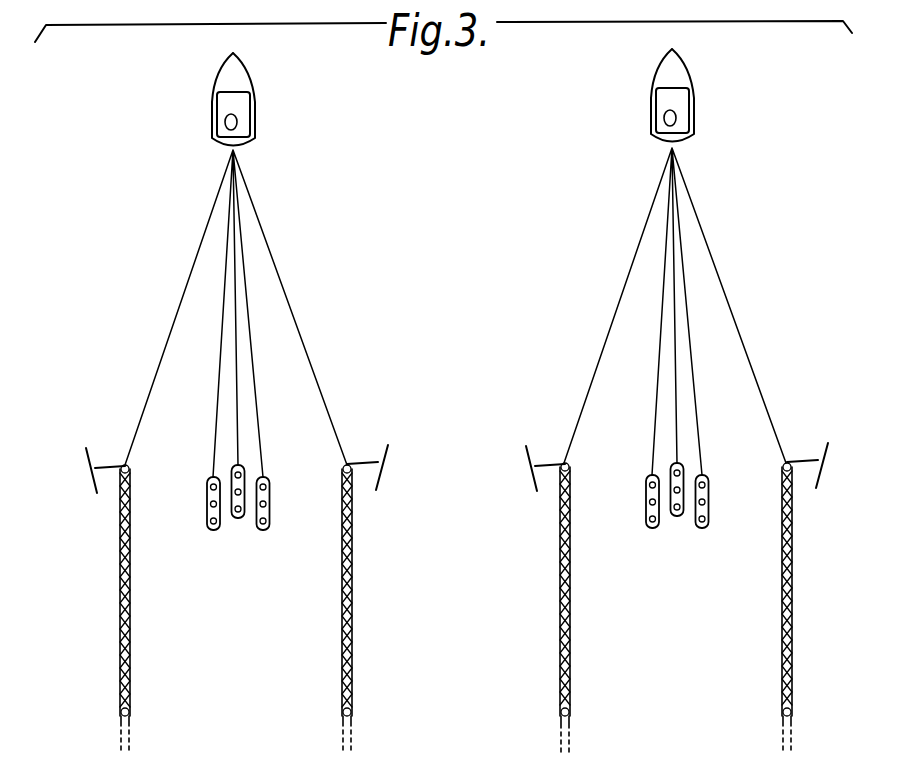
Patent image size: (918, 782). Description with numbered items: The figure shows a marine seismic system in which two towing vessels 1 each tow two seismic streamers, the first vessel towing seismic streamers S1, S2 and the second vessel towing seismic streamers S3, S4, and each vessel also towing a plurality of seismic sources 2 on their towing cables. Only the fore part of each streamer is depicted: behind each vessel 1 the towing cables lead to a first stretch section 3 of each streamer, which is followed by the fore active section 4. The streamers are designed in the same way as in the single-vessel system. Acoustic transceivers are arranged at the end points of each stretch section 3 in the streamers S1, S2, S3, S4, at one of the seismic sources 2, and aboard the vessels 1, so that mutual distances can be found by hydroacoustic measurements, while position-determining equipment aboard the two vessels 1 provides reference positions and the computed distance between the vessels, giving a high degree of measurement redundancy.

The towing vessel 1 is at (243, 100).
The seismic source 2 is at (214, 530).
The fore stretch section 3 is at (458, 579).
The fore active section 4 is at (124, 728).
The seismic streamer S1 is at (118, 622).
The seismic streamer S2 is at (360, 628).
The seismic streamer S3 is at (558, 621).
The seismic streamer S4 is at (800, 628).